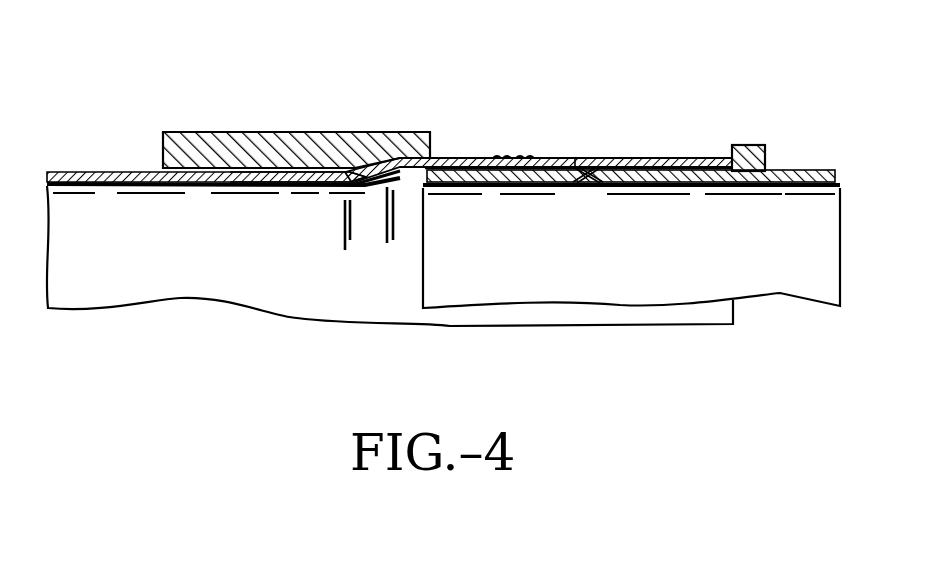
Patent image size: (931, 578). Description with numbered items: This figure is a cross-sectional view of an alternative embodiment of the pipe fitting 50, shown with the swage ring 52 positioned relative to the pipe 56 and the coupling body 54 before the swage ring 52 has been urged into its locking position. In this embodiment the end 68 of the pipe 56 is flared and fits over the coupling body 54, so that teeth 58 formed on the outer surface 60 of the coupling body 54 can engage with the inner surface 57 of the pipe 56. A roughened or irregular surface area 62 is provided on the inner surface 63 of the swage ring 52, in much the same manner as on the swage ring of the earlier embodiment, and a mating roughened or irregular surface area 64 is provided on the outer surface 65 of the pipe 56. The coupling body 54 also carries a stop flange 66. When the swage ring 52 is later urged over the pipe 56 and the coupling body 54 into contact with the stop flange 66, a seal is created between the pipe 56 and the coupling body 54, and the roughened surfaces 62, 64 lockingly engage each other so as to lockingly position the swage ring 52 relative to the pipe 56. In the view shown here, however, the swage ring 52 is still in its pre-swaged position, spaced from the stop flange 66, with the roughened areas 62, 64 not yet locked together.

The pipe fitting 50 is at (122, 75).
The swage ring 52 is at (180, 132).
The coupling body 54 is at (553, 183).
The pipe 56 is at (120, 172).
The inner surface of the pipe 57 is at (587, 168).
The teeth 58 is at (580, 183).
The outer surface of the coupling body 60 is at (643, 172).
The roughened or irregular surface area 62 is at (186, 176).
The inner surface of the swage ring 63 is at (284, 178).
The mating roughened or irregular surface area 64 is at (513, 157).
The outer surface of the pipe 65 is at (555, 157).
The stop flange 66 is at (750, 146).
The end of the pipe 68 is at (457, 157).